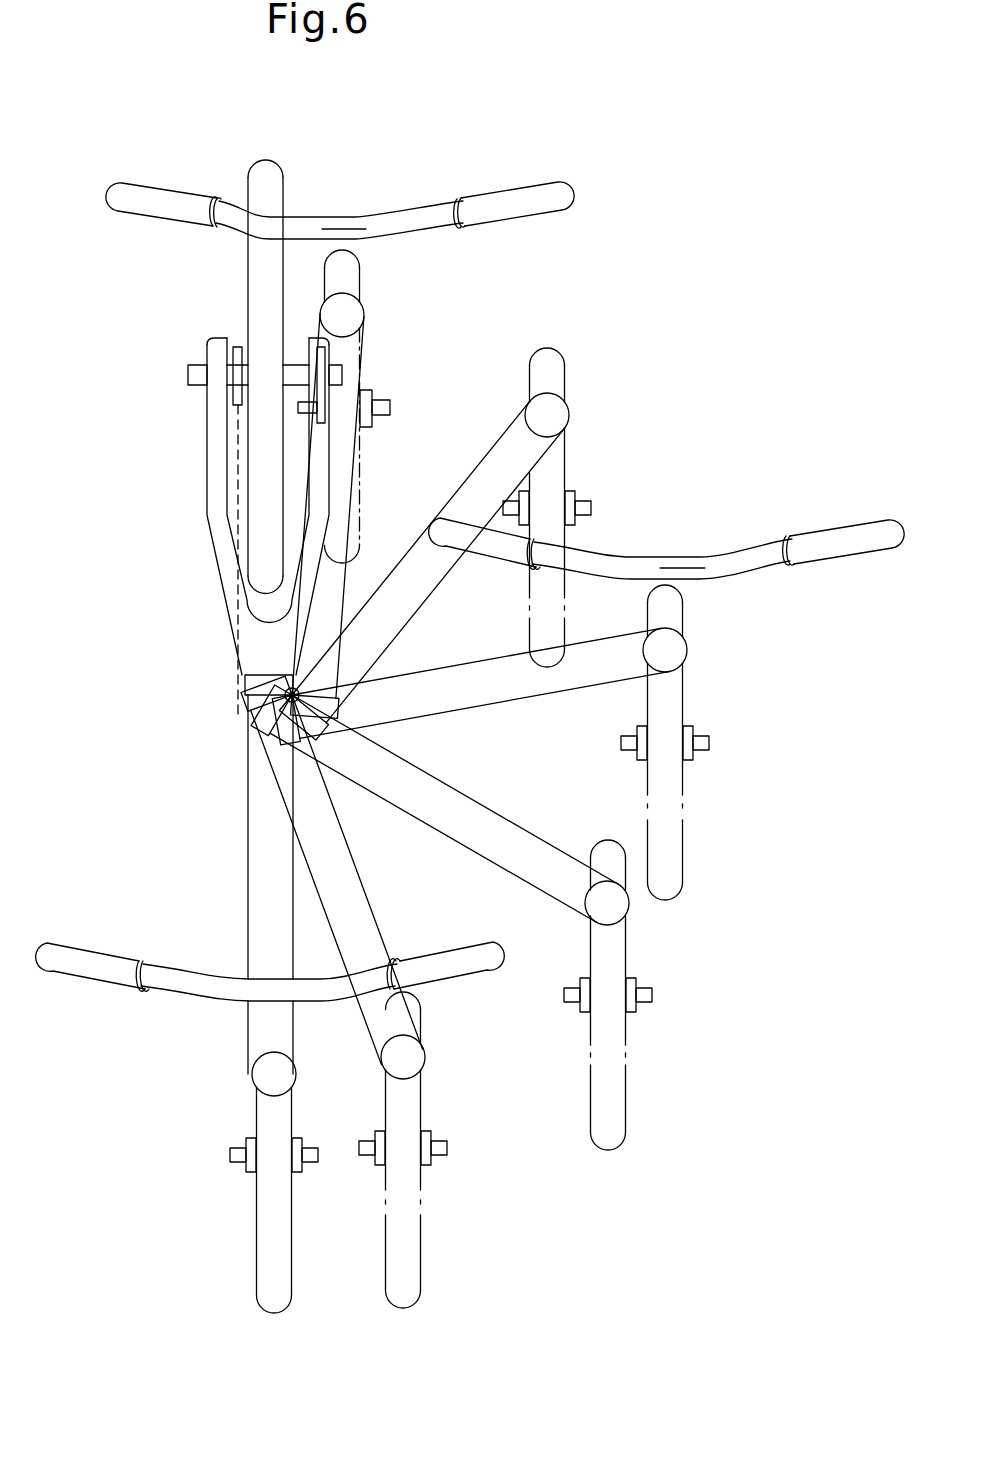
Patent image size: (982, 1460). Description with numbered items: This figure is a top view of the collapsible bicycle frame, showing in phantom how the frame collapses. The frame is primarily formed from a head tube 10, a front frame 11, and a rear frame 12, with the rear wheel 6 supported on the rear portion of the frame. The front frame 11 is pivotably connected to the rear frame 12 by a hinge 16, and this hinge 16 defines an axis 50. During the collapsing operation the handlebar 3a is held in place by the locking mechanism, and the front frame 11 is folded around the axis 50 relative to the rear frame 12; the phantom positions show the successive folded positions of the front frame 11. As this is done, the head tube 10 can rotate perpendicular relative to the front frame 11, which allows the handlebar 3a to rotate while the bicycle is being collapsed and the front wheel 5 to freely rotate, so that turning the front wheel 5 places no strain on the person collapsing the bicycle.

The rear wheel 6 is at (273, 183).
The rear frame 12 is at (233, 602).
The axis 50 is at (290, 698).
The hinge 16 is at (311, 716).
The front frame 11 is at (253, 900).
The handlebar 3a is at (183, 983).
The head tube 10 is at (250, 1075).
The front wheel 5 is at (282, 1240).